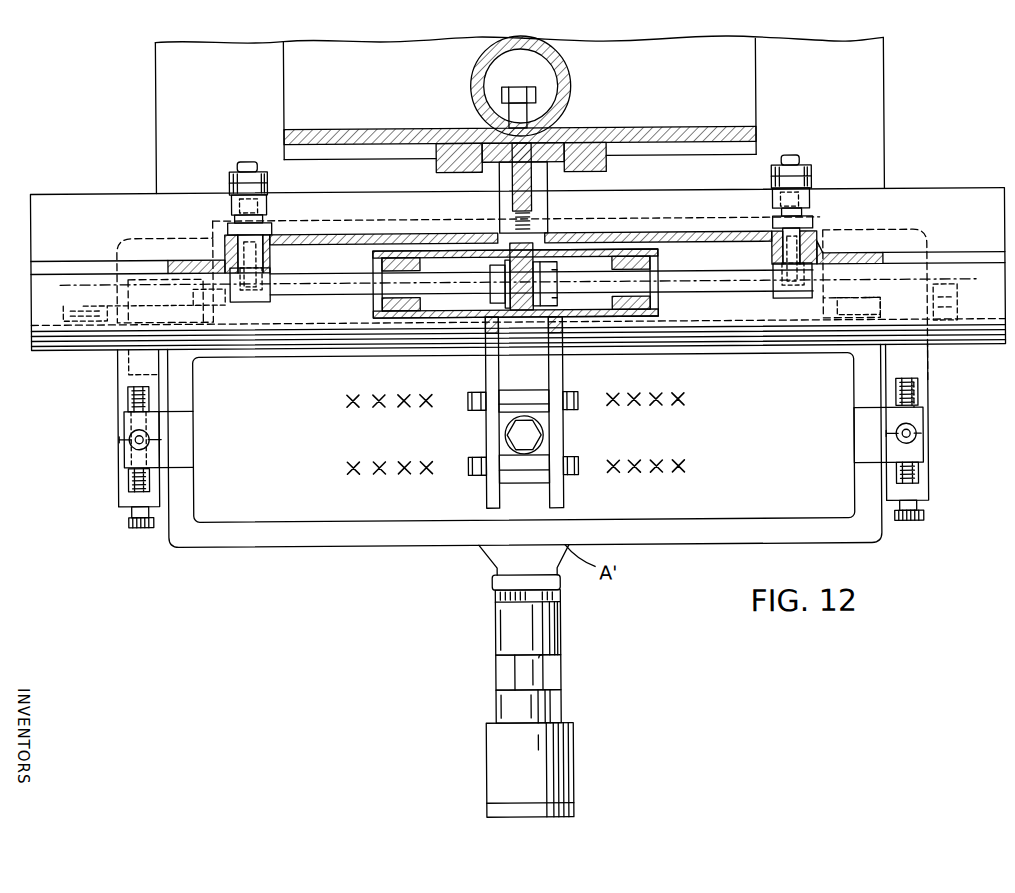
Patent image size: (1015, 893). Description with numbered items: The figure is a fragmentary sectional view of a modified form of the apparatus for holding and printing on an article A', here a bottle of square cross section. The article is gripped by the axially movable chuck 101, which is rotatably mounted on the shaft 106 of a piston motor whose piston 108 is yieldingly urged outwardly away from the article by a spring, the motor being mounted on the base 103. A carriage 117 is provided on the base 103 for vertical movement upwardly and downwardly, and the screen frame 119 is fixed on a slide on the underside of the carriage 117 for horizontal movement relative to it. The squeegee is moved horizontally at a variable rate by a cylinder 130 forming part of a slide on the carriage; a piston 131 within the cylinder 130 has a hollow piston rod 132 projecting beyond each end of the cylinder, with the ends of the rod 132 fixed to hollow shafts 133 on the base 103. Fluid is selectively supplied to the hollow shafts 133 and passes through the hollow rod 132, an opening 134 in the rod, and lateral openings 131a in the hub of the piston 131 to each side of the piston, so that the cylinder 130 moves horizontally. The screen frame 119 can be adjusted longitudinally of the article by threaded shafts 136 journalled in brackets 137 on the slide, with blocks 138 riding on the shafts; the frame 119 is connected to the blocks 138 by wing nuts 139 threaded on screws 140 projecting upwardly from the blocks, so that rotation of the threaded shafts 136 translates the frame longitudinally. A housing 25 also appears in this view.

The housing 25 is at (837, 193).
The axially movable chuck 101 is at (548, 622).
The base 103 is at (933, 255).
The shaft of piston motor 106 is at (537, 670).
The piston 108 is at (562, 750).
The carriage 117 is at (930, 193).
The screen frame 119 is at (868, 535).
The cylinder 130 is at (617, 233).
The piston 131 is at (534, 259).
The lateral openings 131a is at (499, 262).
The hollow piston rod 132 is at (680, 267).
The hollow shafts 133 is at (243, 246).
The opening 134 is at (303, 277).
The threaded shafts 136 is at (133, 479).
The brackets 137 is at (118, 380).
The blocks 138 is at (122, 450).
The wing nuts 139 is at (134, 434).
The screws 140 is at (120, 440).